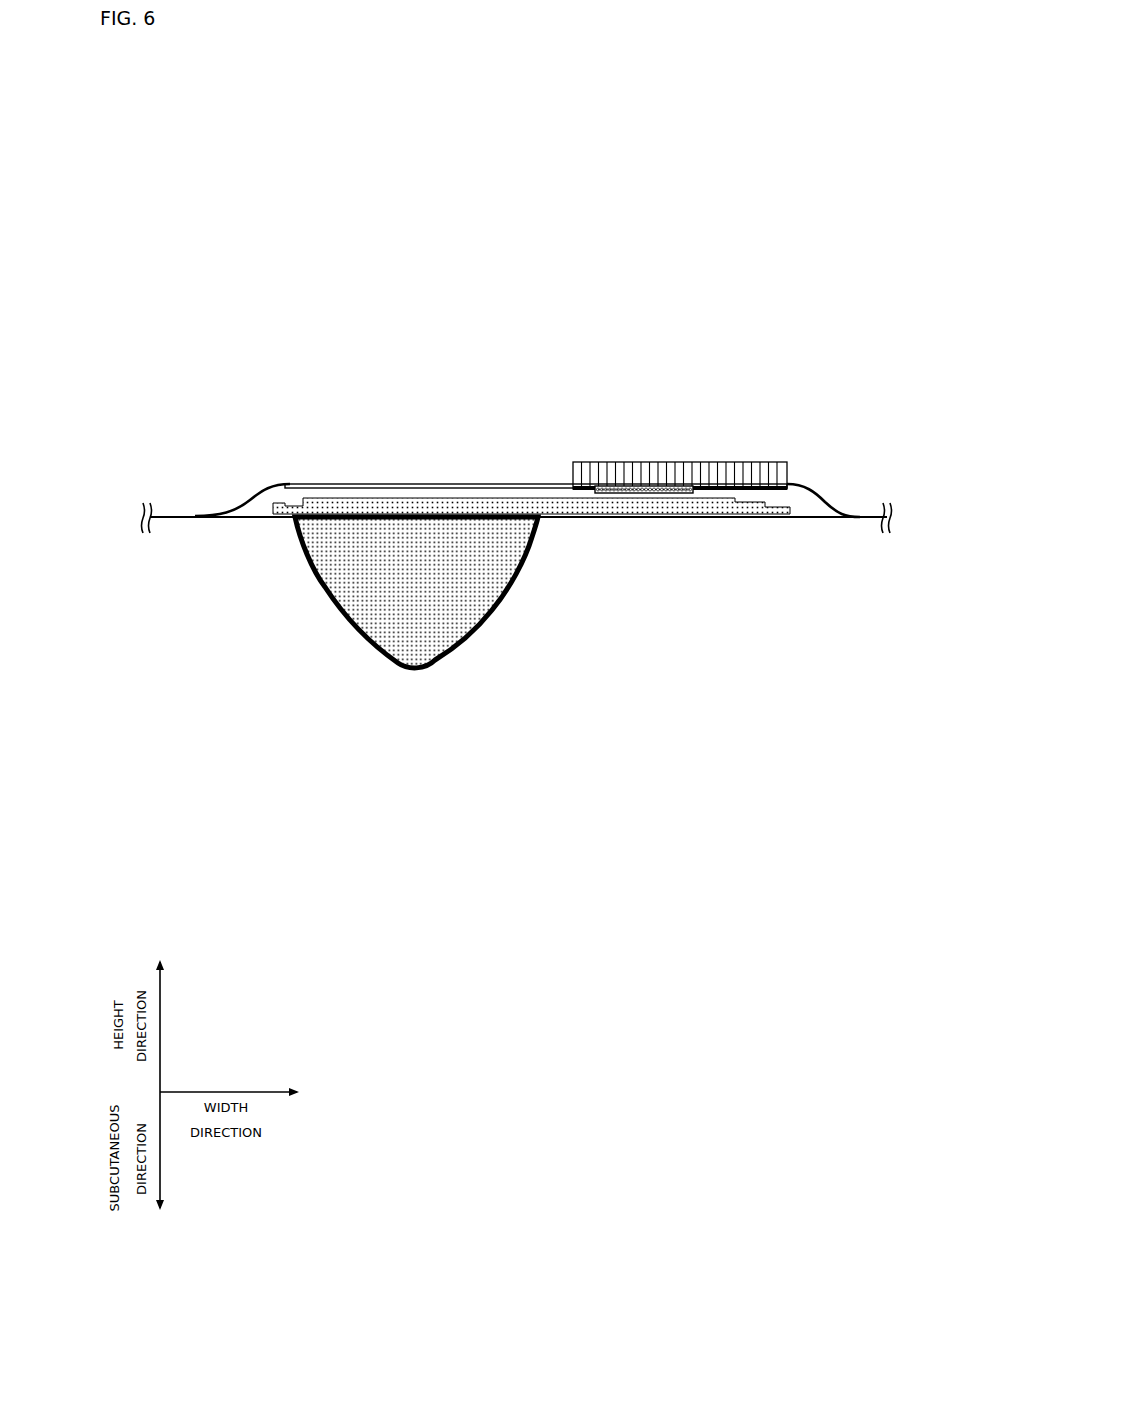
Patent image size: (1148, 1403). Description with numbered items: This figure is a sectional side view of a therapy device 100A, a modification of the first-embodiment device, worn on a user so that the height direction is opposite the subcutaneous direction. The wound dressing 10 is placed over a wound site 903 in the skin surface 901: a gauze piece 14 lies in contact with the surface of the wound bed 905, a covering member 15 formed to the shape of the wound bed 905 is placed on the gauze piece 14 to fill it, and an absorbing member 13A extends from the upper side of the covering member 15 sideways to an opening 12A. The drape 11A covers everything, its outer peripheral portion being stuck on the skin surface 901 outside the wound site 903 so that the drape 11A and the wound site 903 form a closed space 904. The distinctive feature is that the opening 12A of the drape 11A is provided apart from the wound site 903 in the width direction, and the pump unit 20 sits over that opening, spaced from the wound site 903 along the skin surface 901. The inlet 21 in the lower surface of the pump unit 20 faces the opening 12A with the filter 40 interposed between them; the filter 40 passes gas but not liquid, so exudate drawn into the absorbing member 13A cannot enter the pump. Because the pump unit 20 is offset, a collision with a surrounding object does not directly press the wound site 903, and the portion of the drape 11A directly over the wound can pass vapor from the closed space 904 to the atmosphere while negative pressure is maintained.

The therapy device 100A is at (758, 283).
The wound dressing 10 is at (614, 411).
The drape 11A is at (518, 484).
The opening 12A is at (652, 496).
The absorbing member 13A is at (530, 531).
The gauze piece 14 is at (360, 628).
The covering member 15 is at (347, 573).
The pump unit 20 is at (757, 462).
The inlet 21 is at (648, 482).
The filter 40 is at (686, 486).
The skin surface 901 is at (233, 507).
The wound site 903 is at (389, 664).
The closed space 904 is at (424, 491).
The wound bed 905 is at (389, 697).